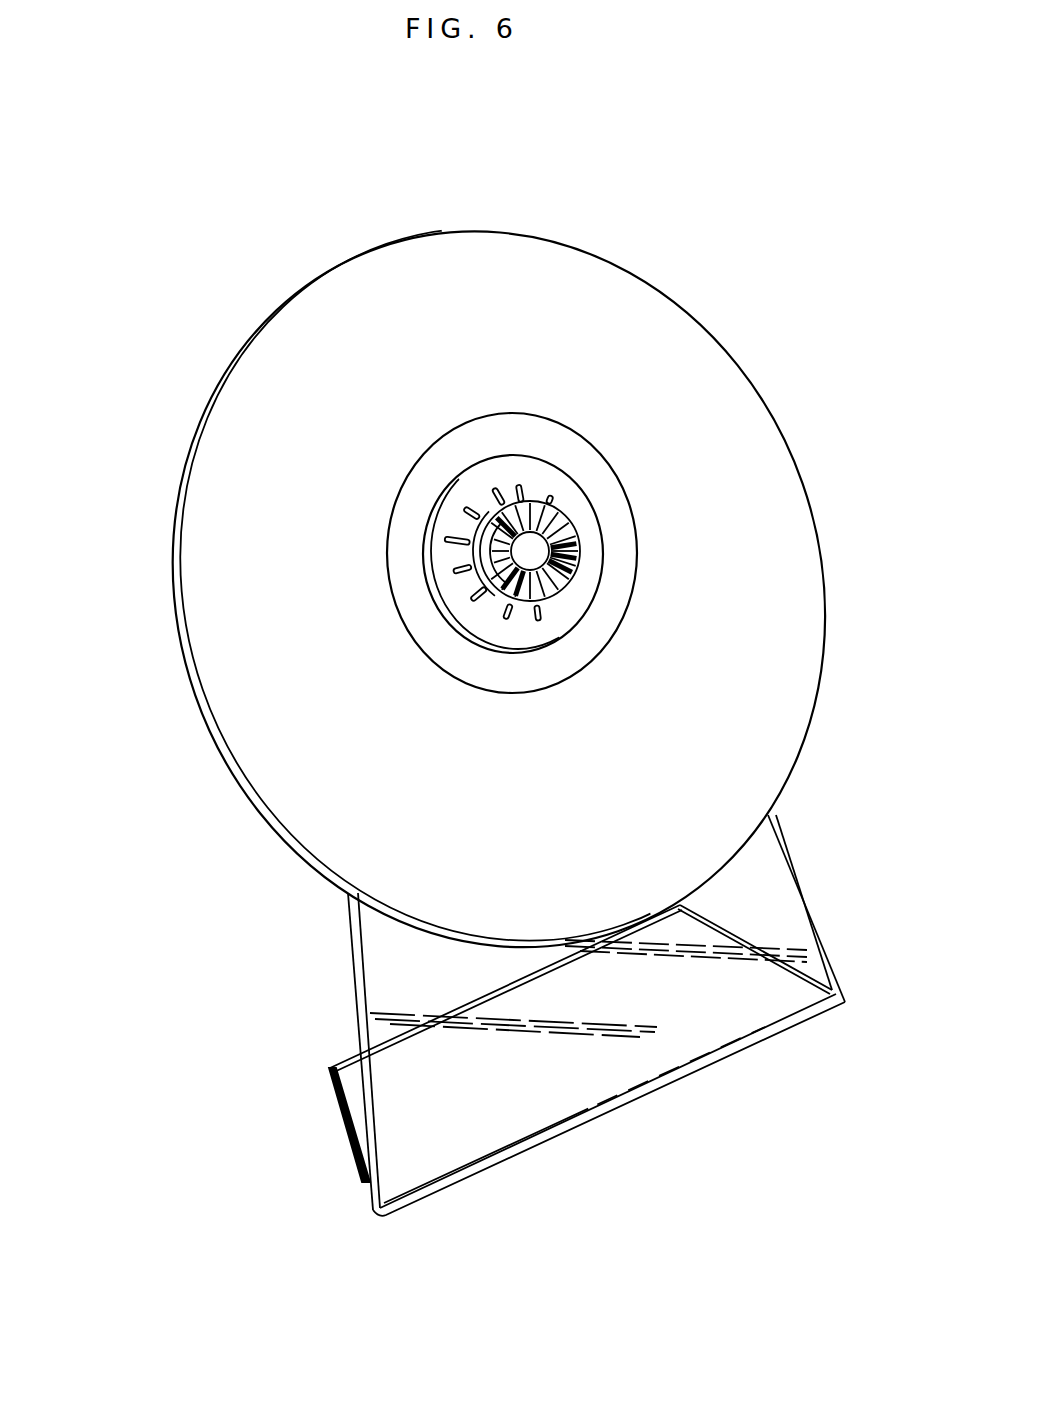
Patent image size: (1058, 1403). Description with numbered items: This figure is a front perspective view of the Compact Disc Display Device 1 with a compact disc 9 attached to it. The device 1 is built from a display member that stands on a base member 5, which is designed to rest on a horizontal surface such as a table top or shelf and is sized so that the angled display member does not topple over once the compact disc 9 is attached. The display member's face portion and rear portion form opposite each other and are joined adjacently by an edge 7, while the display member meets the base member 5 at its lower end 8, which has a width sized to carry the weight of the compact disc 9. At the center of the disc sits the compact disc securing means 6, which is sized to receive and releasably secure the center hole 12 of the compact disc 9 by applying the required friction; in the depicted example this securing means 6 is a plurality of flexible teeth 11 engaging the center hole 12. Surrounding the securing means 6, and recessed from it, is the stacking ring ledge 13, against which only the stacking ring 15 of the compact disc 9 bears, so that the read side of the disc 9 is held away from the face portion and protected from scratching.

The Compact Disc Display Device 1 is at (795, 832).
The base member 5 is at (330, 1135).
The compact disc securing means 6 is at (602, 494).
The edge 7 is at (352, 985).
The lower end 8 is at (655, 1023).
The compact disc 9 is at (658, 286).
The flexible teeth 11 is at (524, 501).
The center hole 12 is at (470, 560).
The stacking ring ledge 13 is at (432, 517).
The stacking ring 15 is at (430, 430).